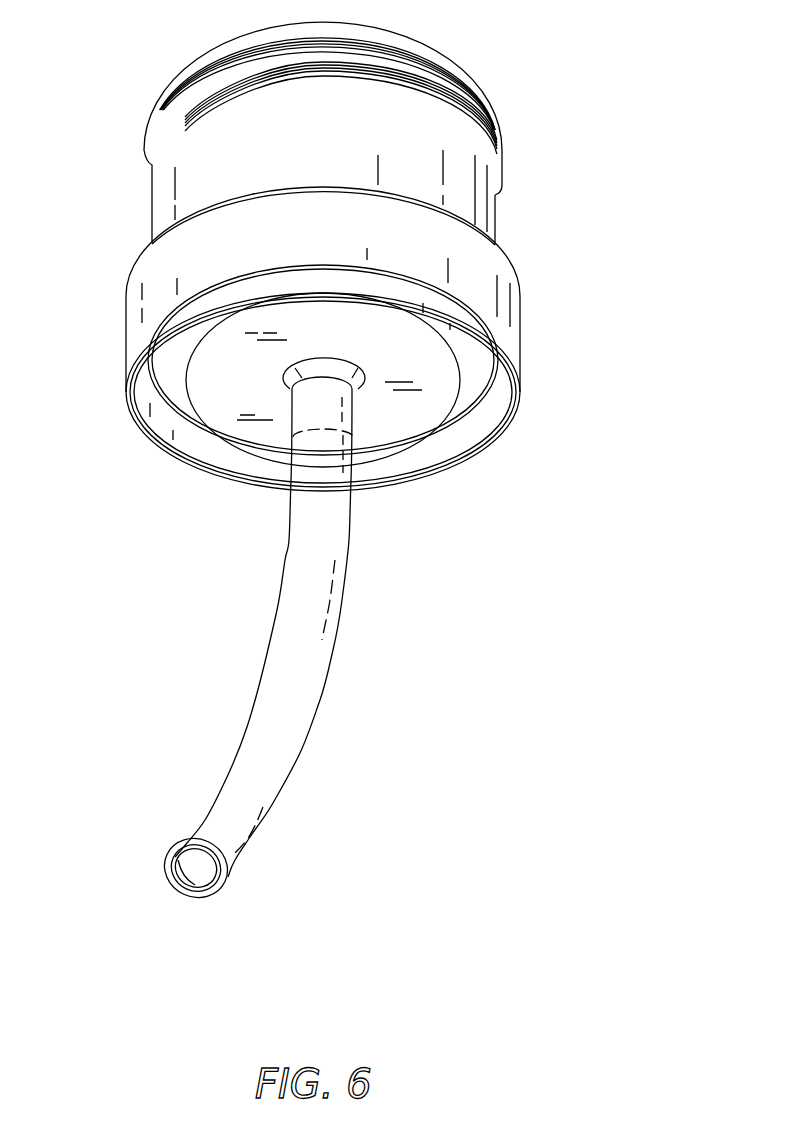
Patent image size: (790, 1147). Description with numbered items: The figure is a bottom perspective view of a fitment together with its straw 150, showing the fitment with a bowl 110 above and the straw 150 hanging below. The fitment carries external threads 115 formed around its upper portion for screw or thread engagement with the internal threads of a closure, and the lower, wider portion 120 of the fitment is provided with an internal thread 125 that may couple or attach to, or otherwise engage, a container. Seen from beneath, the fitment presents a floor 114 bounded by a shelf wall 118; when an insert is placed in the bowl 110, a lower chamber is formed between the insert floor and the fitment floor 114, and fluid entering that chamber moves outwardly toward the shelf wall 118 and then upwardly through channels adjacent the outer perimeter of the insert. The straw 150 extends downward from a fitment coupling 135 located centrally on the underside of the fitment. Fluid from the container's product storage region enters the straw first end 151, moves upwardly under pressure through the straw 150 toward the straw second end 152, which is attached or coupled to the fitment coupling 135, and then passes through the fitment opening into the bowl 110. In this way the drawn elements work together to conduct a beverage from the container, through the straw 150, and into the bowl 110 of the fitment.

The bowl 110 is at (483, 213).
The threads 115 is at (488, 145).
The flange 120 is at (510, 317).
The internal thread 125 is at (488, 397).
The floor 114 is at (217, 395).
The shelf wall 118 is at (152, 397).
The fitment coupling 135 is at (303, 415).
The straw 150 is at (312, 650).
The straw first end 151 is at (217, 888).
The straw second end 152 is at (334, 435).